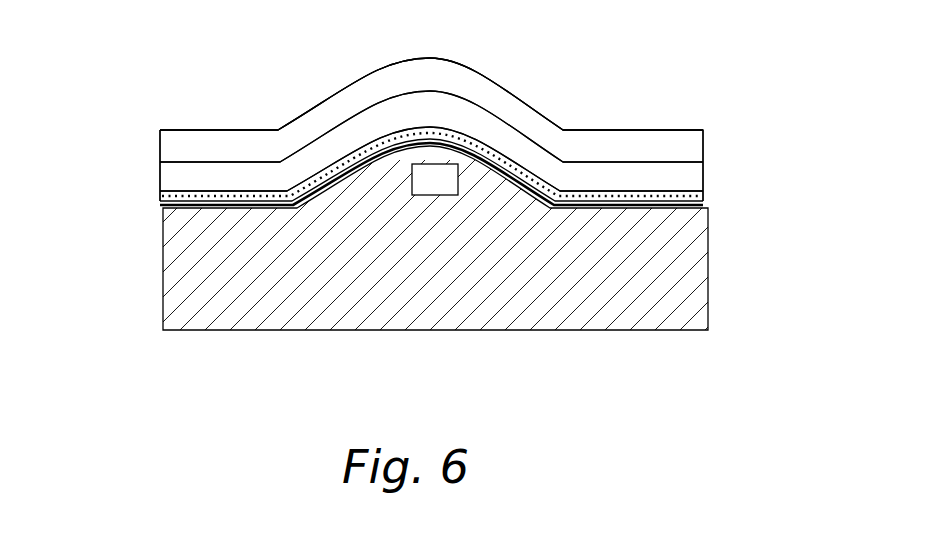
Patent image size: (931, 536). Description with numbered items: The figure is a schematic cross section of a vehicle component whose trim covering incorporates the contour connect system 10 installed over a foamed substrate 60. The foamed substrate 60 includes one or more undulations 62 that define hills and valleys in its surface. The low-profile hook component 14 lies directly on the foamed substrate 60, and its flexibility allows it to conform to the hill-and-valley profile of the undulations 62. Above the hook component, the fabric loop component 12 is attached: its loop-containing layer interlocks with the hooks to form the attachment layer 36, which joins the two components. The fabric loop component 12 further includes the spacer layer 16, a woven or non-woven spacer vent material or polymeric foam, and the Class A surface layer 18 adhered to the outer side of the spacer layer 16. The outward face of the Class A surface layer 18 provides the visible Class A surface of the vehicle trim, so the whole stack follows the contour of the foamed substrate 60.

The contour connect system 10 is at (197, 130).
The fabric loop component 12 is at (140, 160).
The low-profile hook component 14 is at (160, 205).
The spacer layer 16 is at (698, 172).
The Class A surface layer 18 is at (695, 140).
The attachment layer 36 is at (702, 199).
The foamed substrate 60 is at (708, 242).
The undulations 62 is at (424, 191).